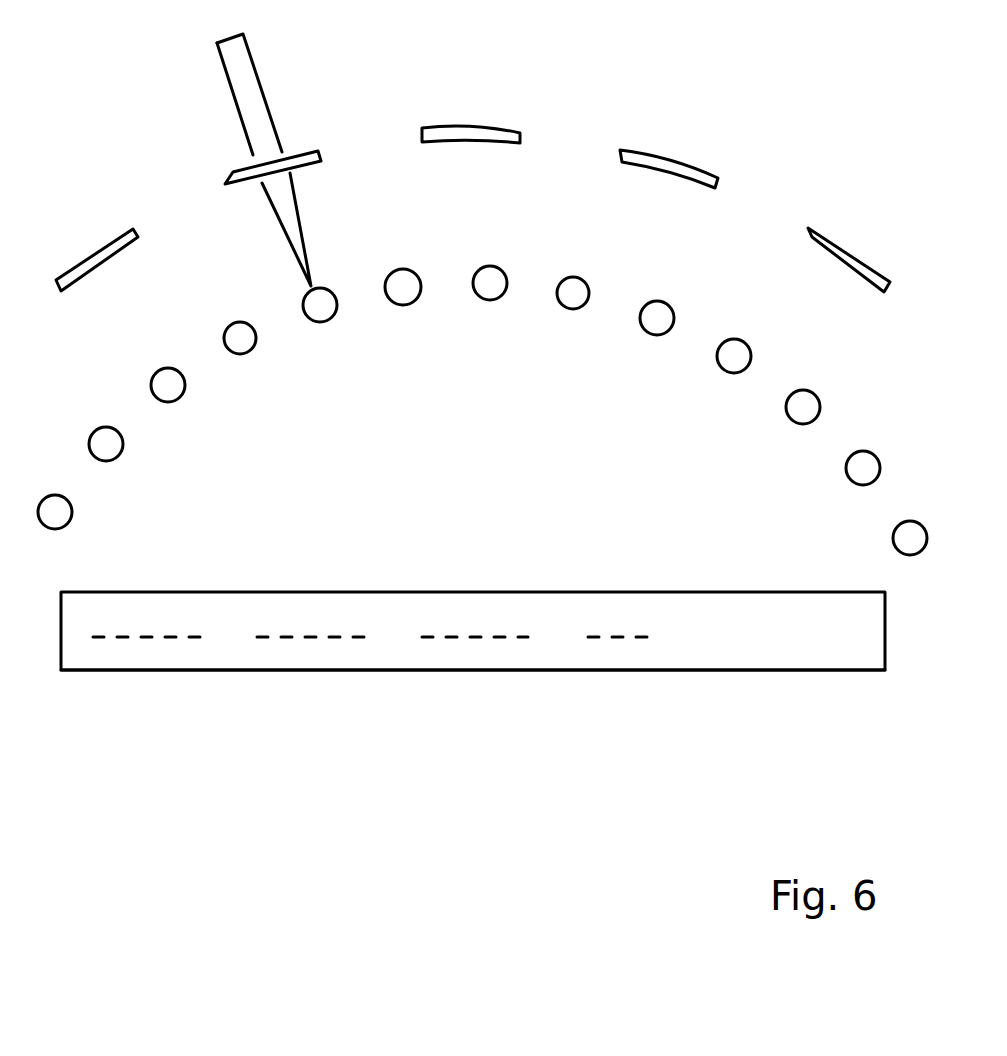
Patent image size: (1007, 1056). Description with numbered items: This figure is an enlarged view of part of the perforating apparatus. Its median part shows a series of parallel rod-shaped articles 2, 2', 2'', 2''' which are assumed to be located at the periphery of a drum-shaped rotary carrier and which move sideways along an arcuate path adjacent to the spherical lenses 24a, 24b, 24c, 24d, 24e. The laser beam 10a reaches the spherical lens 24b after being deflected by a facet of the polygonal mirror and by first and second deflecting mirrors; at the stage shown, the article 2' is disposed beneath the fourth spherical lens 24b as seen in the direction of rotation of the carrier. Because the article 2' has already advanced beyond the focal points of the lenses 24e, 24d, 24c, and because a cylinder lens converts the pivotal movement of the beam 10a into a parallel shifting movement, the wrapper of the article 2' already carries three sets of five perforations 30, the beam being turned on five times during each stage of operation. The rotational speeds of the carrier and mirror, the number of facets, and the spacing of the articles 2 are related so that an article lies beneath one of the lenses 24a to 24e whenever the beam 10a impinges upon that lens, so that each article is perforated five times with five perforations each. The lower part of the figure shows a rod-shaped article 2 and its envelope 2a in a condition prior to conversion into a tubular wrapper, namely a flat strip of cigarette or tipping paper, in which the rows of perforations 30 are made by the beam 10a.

The laser beam 10a is at (240, 63).
The spherical lens 24a is at (128, 233).
The spherical lens 24b is at (310, 148).
The spherical lens 24c is at (487, 128).
The spherical lens 24d is at (673, 160).
The spherical lens 24e is at (845, 247).
The rod-shaped article 2 is at (482, 416).
The rod-shaped article 2' is at (473, 479).
The rod-shaped article 2'' is at (492, 334).
The rod-shaped article 2''' is at (405, 340).
The envelope 2a is at (762, 650).
The rows of perforations 30 is at (97, 638).